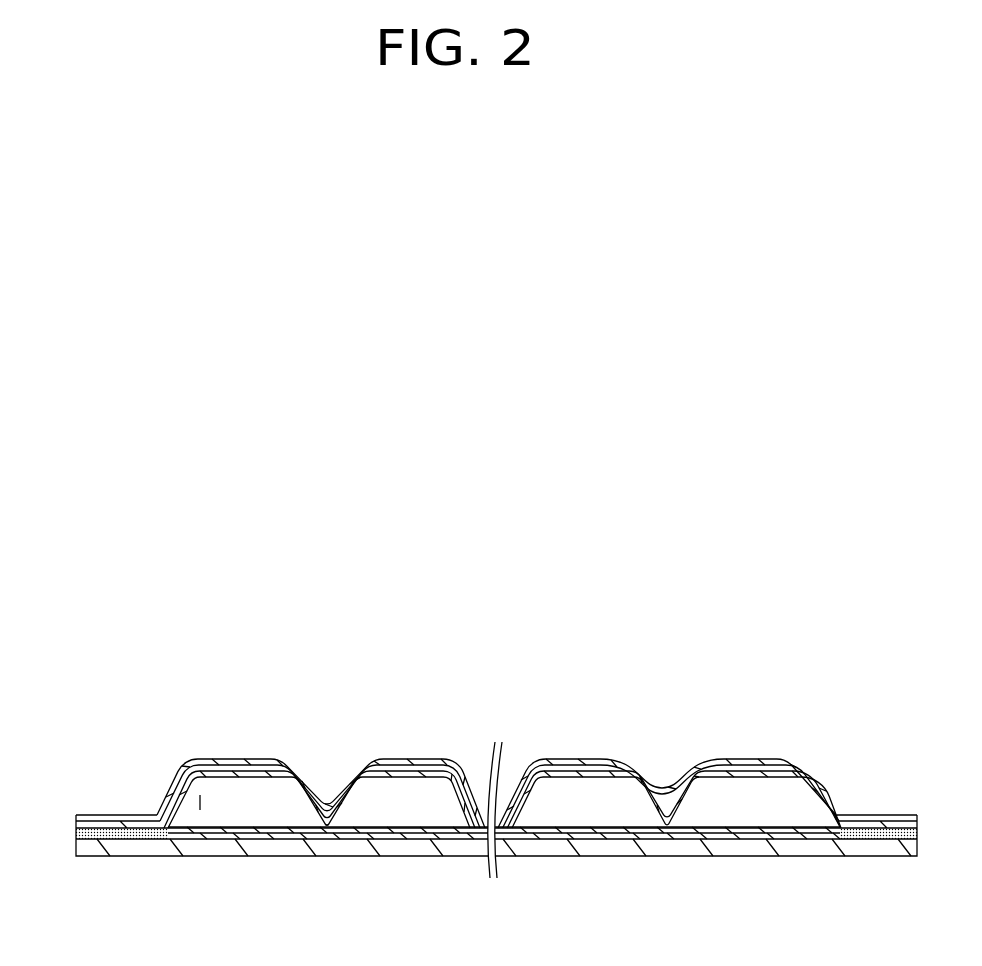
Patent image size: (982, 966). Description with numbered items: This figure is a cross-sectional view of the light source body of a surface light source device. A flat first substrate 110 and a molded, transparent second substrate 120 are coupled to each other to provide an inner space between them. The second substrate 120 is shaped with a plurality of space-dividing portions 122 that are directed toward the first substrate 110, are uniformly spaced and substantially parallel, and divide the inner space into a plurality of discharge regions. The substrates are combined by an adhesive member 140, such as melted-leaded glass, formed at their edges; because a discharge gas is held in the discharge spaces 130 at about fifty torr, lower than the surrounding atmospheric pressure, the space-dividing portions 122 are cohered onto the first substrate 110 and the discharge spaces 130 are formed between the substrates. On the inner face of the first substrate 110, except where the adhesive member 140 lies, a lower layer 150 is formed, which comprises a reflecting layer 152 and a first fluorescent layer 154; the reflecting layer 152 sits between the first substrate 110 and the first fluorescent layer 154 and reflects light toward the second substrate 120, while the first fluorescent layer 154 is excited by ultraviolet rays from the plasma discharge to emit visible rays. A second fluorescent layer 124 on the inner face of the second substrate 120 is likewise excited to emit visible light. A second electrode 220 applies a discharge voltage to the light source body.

The first substrate 110 is at (405, 848).
The second substrate 120 is at (496, 758).
The space-dividing portions 122 is at (329, 804).
The second fluorescent layer 124 is at (257, 775).
The discharge spaces 130 is at (198, 803).
The adhesive member 140 is at (77, 832).
The lower layer 150 is at (504, 886).
The reflecting layer 152 is at (222, 830).
The first fluorescent layer 154 is at (203, 907).
The second electrode 220 is at (417, 765).